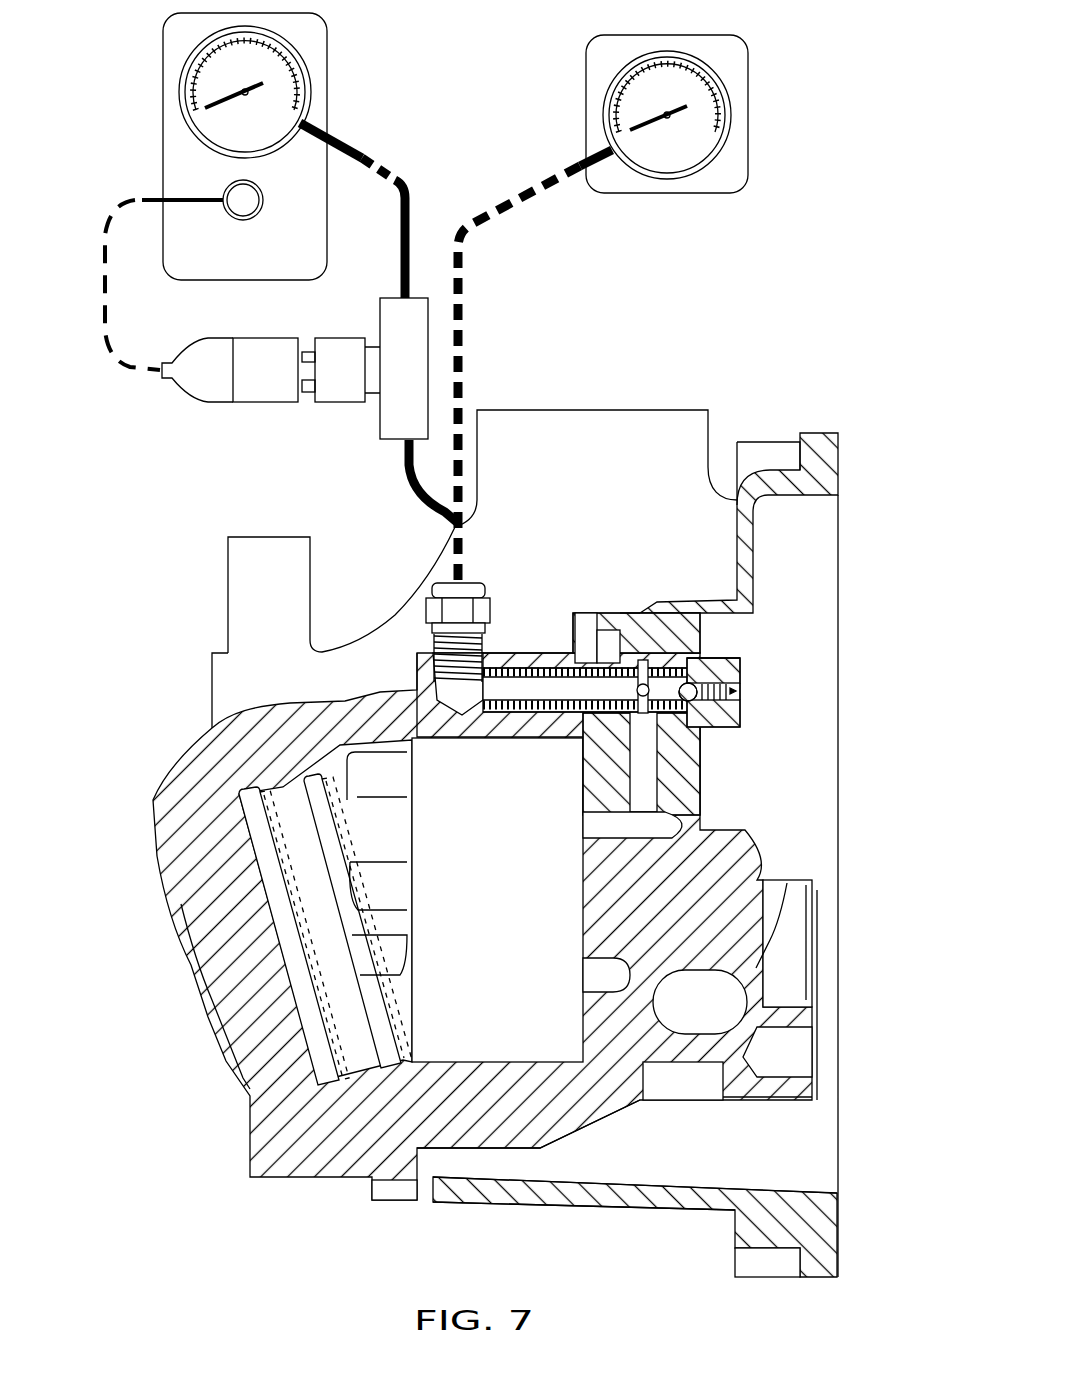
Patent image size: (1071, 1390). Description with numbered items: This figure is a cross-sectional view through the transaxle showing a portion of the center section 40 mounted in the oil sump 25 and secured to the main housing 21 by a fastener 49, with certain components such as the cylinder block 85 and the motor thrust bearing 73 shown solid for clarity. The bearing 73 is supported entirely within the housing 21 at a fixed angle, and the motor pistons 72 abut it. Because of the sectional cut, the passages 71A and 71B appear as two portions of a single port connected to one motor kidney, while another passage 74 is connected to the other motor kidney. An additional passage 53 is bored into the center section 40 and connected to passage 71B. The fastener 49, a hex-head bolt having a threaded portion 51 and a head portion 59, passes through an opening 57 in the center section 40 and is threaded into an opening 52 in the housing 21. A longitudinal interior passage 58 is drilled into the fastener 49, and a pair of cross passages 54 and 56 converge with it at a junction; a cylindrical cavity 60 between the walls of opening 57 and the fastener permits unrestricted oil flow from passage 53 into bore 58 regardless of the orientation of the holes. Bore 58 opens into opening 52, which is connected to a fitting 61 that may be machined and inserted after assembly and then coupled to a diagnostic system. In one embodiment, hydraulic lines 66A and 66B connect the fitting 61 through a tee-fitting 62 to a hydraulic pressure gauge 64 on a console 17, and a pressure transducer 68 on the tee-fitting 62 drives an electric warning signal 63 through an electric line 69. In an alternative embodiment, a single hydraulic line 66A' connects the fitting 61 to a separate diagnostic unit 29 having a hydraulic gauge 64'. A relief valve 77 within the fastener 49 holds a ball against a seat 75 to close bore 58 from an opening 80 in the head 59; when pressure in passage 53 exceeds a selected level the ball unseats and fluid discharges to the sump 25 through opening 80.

The console 17 is at (327, 62).
The hydraulic pressure gauge 64 is at (210, 92).
The electric warning signal 63 is at (228, 192).
The electric line 69 is at (103, 278).
The pressure transducer 68 is at (283, 386).
The tee-fitting 62 is at (422, 386).
The hydraulic line 66A is at (384, 481).
The hydraulic line 66B is at (405, 192).
The hydraulic line 66A' is at (535, 366).
The diagnostic unit 29 is at (748, 88).
The hydraulic gauge 64' is at (626, 115).
The fitting 61 is at (490, 598).
The threaded portion 51 is at (565, 685).
The interior passage (bore) 58 is at (540, 690).
The cross passage 56 is at (628, 675).
The cross passage 54 is at (622, 660).
The seat 75 is at (650, 685).
The fastener 49 is at (730, 660).
The head portion 59 is at (743, 665).
The opening 80 is at (743, 686).
The relief valve 77 is at (762, 700).
The opening 57 is at (697, 727).
The cylindrical cavity 60 is at (670, 758).
The passage 53 is at (643, 780).
The opening 52 is at (493, 667).
The passage 71B is at (703, 862).
The motor pistons 72 is at (397, 846).
The cylinder block 85 is at (516, 914).
The motor thrust bearing 73 is at (263, 840).
The passage 74 is at (718, 1016).
The passage 71A is at (607, 977).
The center section 40 is at (580, 1120).
The oil sump 25 is at (704, 1174).
The main housing 21 is at (832, 455).